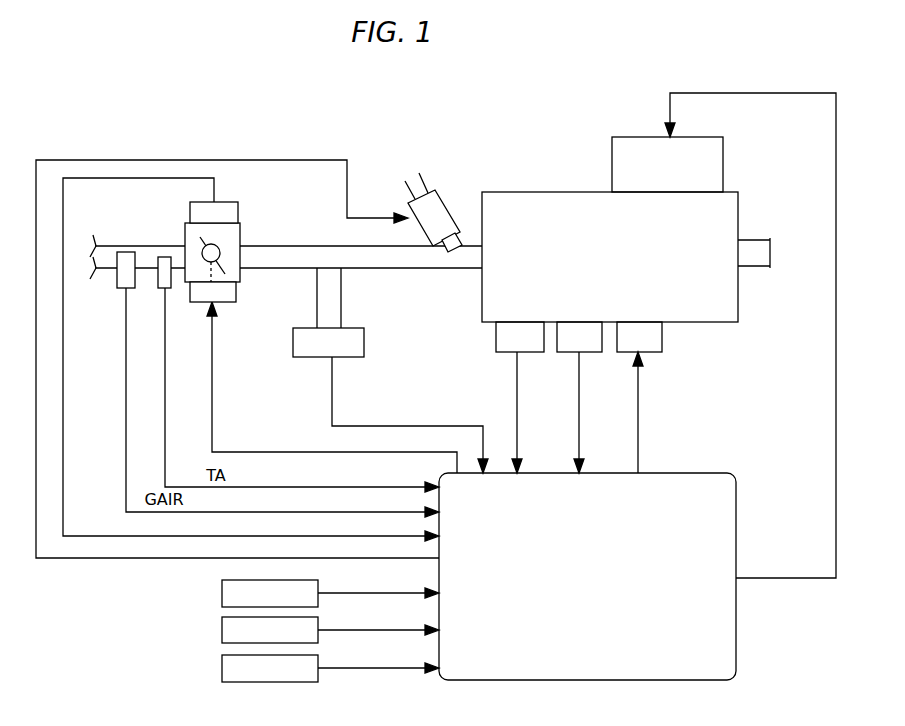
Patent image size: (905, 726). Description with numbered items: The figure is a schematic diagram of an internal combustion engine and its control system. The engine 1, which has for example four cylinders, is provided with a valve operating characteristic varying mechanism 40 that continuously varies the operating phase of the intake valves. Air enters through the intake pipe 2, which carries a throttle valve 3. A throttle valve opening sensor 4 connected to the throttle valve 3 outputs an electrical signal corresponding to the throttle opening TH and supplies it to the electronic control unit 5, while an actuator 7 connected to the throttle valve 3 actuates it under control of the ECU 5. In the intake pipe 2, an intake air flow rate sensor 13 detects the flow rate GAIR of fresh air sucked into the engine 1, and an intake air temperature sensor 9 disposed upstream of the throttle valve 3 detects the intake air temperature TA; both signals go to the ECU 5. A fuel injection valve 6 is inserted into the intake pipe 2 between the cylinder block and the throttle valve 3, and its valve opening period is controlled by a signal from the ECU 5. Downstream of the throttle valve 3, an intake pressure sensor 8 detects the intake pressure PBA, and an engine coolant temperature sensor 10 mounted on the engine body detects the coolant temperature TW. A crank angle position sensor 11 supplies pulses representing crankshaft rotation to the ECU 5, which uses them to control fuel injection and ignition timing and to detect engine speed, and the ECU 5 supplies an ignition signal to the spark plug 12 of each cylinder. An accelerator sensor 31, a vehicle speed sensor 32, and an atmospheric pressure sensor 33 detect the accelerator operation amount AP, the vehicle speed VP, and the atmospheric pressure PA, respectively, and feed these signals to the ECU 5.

The internal combustion engine 1 is at (540, 192).
The intake pipe 2 is at (320, 244).
The throttle valve 3 is at (203, 242).
The throttle valve opening sensor 4 is at (229, 202).
The electronic control unit 5 is at (615, 473).
The fuel injection valve 6 is at (452, 213).
The actuator 7 is at (230, 304).
The intake pressure sensor 8 is at (352, 358).
The intake air temperature sensor 9 is at (162, 290).
The engine coolant temperature sensor 10 is at (535, 353).
The crank angle position sensor 11 is at (597, 353).
The spark plug 12 is at (655, 353).
The intake air flow rate sensor 13 is at (122, 290).
The accelerator sensor 31 is at (222, 590).
The vehicle speed sensor 32 is at (222, 627).
The atmospheric pressure sensor 33 is at (222, 665).
The valve operating characteristic varying mechanism 40 is at (628, 137).